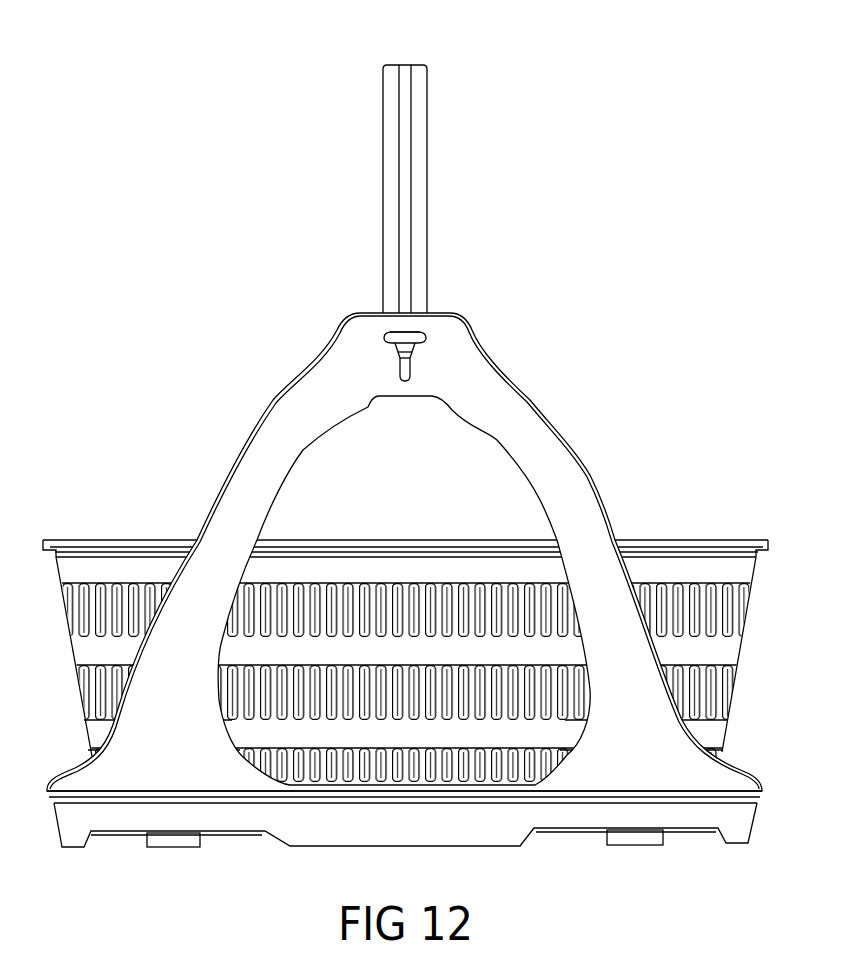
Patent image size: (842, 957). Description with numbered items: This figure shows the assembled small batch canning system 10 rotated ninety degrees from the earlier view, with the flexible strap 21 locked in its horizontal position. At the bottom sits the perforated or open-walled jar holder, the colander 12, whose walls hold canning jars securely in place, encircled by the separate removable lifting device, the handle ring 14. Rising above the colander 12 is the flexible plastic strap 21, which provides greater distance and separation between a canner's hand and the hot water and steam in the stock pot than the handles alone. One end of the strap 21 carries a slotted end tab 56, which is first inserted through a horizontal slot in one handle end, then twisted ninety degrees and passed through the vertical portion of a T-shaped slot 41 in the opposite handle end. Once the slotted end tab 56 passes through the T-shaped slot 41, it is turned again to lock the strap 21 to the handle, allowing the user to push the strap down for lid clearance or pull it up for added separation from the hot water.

The small batch canning system 10 is at (226, 382).
The colander 12 is at (675, 515).
The handle ring 14 is at (187, 647).
The flexible strap 21 is at (391, 138).
The T-shaped slot 41 is at (422, 352).
The slotted end tab 56 is at (405, 333).